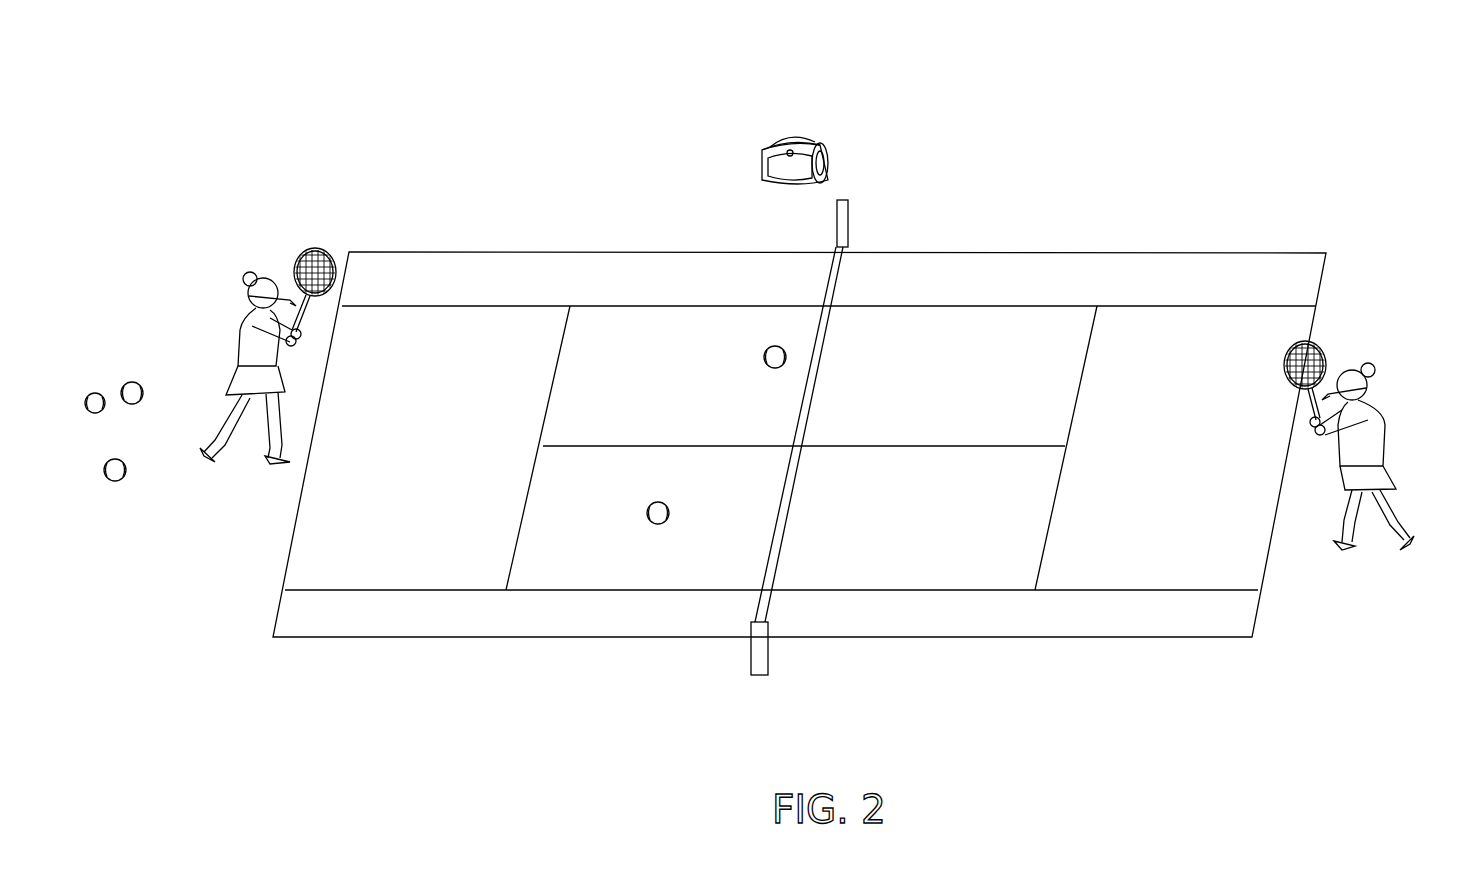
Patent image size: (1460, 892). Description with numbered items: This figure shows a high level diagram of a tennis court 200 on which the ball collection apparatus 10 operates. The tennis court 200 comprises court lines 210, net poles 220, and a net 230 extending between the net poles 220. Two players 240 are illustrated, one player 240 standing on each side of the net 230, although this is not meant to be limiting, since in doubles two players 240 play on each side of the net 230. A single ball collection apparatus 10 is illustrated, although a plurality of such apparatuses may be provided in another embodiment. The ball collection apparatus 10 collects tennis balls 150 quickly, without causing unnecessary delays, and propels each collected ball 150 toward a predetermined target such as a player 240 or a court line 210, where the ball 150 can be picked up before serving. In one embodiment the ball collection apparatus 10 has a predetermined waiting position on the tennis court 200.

The tennis court 200 is at (1085, 74).
The ball collection apparatus 10 is at (785, 140).
The ball 150 is at (123, 477).
The court lines 210 is at (430, 638).
The net poles 220 is at (845, 205).
The net 230 is at (780, 525).
The player 240 is at (245, 365).